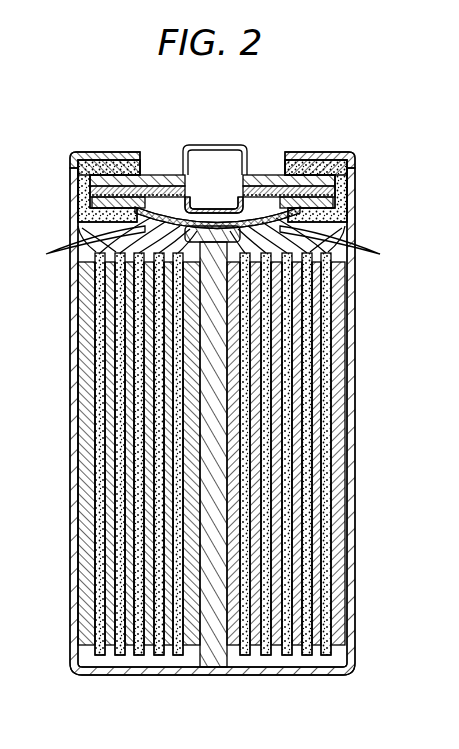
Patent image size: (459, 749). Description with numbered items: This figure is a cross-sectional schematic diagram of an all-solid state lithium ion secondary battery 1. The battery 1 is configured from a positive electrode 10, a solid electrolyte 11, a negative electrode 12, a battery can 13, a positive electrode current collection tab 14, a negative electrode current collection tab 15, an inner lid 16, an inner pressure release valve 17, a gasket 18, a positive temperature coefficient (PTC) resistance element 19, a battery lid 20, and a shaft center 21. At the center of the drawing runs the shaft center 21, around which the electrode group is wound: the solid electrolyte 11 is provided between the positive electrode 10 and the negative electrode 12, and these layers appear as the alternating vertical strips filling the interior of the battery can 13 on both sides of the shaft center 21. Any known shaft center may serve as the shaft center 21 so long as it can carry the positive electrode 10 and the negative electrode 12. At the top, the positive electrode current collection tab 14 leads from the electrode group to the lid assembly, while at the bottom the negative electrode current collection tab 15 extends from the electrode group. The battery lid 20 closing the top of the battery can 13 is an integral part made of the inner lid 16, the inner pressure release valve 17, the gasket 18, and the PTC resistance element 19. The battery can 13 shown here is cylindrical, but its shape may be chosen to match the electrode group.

The battery 1 is at (388, 121).
The positive electrode 10 is at (145, 490).
The solid electrolyte 11 is at (130, 550).
The negative electrode 12 is at (82, 595).
The battery can 13 is at (356, 378).
The positive electrode current collection tab 14 is at (70, 249).
The negative electrode current collection tab 15 is at (141, 658).
The inner lid 16 is at (318, 214).
The inner pressure release valve 17 is at (213, 200).
The gasket 18 is at (80, 166).
The positive temperature coefficient (PTC) resistance element 19 is at (92, 194).
The battery lid 20 is at (251, 180).
The shaft center 21 is at (210, 648).